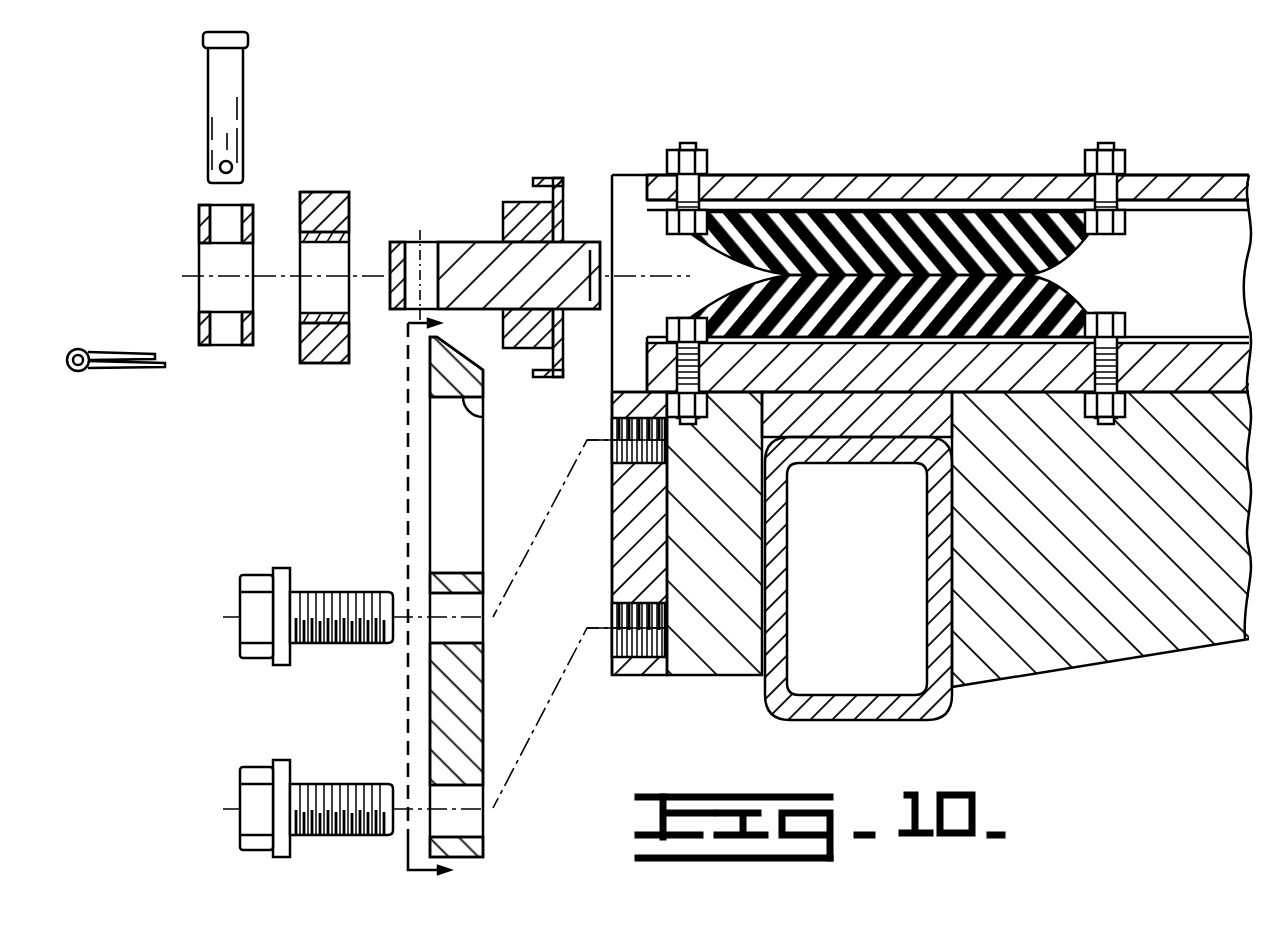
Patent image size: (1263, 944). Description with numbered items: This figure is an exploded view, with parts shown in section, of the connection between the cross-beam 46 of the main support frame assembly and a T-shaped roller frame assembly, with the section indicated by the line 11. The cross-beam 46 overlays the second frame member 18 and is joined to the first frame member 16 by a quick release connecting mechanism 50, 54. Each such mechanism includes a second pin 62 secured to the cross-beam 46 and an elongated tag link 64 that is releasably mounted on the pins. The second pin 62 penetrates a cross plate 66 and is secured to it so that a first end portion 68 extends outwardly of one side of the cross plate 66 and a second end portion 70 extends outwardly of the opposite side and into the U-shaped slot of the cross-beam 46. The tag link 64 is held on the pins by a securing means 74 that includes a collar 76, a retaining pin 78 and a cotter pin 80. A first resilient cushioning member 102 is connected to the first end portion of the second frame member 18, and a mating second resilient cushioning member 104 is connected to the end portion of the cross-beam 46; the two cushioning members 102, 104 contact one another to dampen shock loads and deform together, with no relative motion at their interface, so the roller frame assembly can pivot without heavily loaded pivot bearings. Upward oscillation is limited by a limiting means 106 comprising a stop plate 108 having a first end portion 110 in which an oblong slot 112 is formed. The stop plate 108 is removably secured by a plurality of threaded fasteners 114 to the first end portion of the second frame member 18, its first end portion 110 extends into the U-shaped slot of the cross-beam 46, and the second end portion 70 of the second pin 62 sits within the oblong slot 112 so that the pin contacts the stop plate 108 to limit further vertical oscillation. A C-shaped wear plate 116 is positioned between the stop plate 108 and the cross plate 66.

The section line 11- 11 is at (411, 600).
The first frame member 16 is at (937, 703).
The second frame member 18 is at (1177, 350).
The cross-beam 46 is at (980, 180).
The first quick release connecting mechanism 50 is at (314, 284).
The second quick release connecting mechanism 54 is at (314, 284).
The second pin 62 is at (529, 228).
The tag link 64 is at (347, 210).
The cross plate 66 is at (503, 222).
The first end portion 68 is at (462, 242).
The second end portion 70 is at (603, 277).
The securing means 74 is at (420, 130).
The collar 76 is at (200, 213).
The retaining pin 78 is at (237, 83).
The cotter pin 80 is at (118, 370).
The first resilient cushioning member 102 is at (1083, 300).
The second resilient cushioning member 104 is at (862, 218).
The limiting means 106 is at (378, 422).
The stop plate 108 is at (512, 597).
The first end portion 110 is at (500, 394).
The oblong slot 112 is at (480, 422).
The threaded fasteners 114 is at (352, 638).
The C-shaped wear plate 116 is at (553, 178).